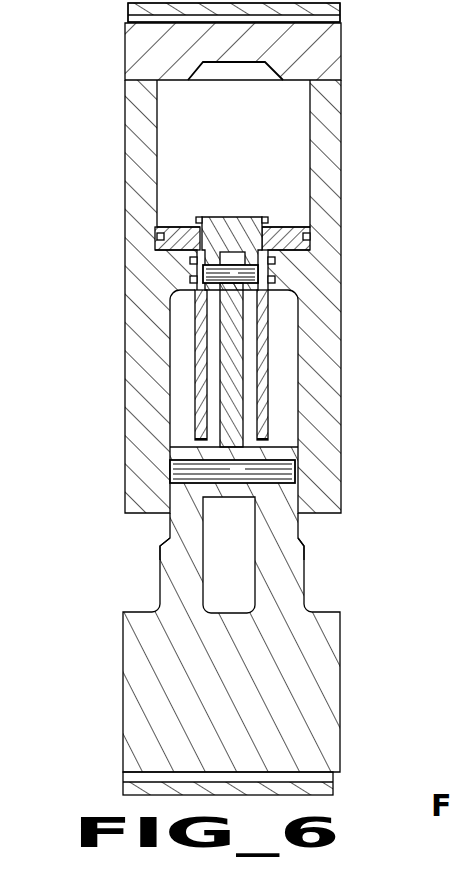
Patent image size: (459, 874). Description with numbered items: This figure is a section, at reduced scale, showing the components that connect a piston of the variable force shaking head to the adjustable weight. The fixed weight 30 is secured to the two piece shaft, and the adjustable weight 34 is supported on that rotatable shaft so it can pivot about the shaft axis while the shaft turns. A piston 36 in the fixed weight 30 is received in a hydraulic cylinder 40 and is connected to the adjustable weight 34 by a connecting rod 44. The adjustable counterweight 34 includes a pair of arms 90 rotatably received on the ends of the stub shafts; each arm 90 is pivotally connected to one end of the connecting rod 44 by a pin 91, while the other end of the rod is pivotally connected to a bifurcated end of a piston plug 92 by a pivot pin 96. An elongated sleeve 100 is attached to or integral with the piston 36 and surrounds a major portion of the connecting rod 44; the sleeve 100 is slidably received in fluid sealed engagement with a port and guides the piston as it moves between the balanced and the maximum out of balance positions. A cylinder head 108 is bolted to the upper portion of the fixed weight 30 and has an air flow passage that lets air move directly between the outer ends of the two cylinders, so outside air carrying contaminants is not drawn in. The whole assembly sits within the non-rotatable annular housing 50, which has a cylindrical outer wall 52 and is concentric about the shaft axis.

The fixed weight 30 is at (352, 87).
The adjustable weight 34 is at (350, 638).
The piston 36 is at (300, 229).
The hydraulic cylinder 40 is at (306, 138).
The connecting rod 44 is at (235, 358).
The annular housing 50 is at (127, 10).
The cylindrical outer wall 52 is at (340, 10).
The arms 90 is at (160, 562).
The pins 91 is at (280, 470).
The piston plug 92 is at (224, 217).
The pivot pin 96 is at (258, 271).
The elongated sleeve 100 is at (262, 315).
The cylinder head 108 is at (331, 48).